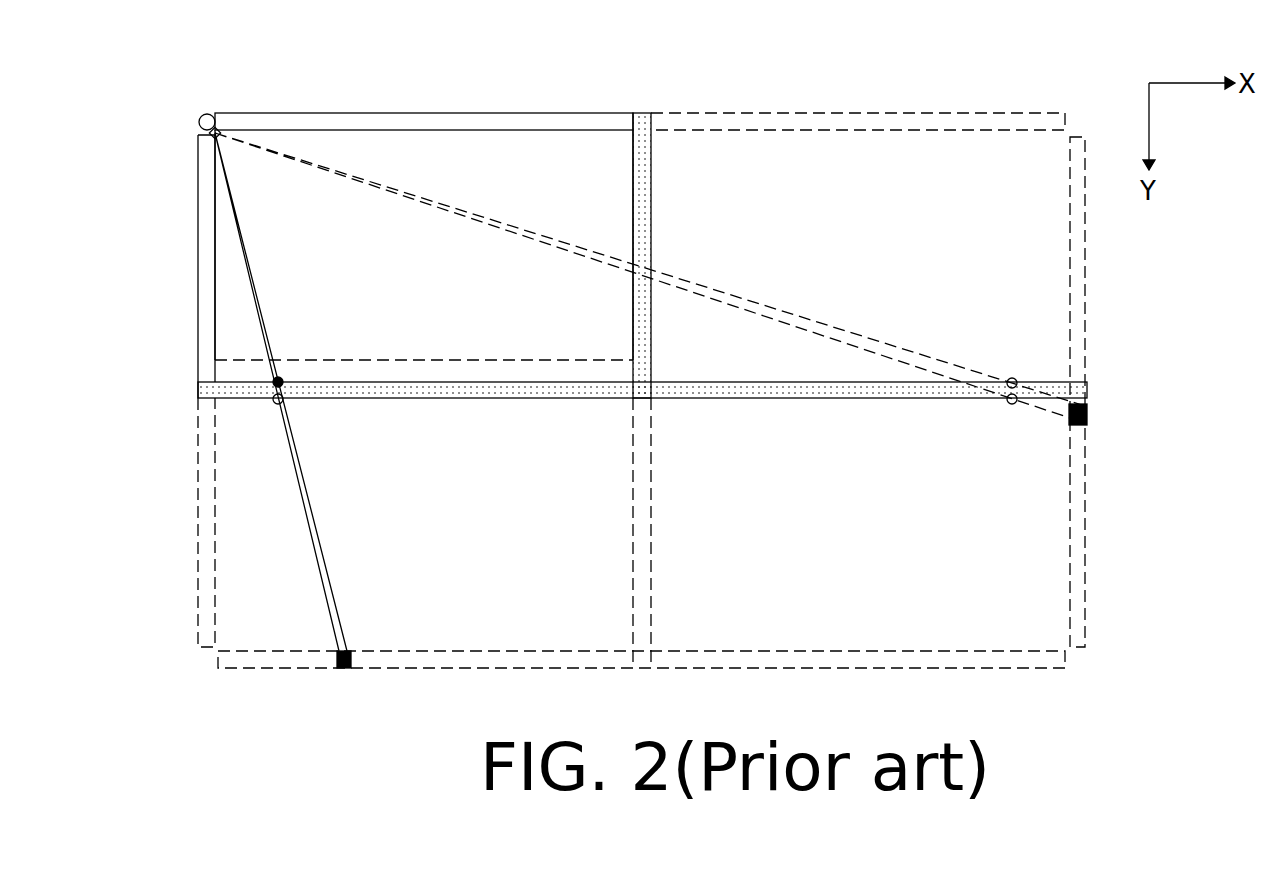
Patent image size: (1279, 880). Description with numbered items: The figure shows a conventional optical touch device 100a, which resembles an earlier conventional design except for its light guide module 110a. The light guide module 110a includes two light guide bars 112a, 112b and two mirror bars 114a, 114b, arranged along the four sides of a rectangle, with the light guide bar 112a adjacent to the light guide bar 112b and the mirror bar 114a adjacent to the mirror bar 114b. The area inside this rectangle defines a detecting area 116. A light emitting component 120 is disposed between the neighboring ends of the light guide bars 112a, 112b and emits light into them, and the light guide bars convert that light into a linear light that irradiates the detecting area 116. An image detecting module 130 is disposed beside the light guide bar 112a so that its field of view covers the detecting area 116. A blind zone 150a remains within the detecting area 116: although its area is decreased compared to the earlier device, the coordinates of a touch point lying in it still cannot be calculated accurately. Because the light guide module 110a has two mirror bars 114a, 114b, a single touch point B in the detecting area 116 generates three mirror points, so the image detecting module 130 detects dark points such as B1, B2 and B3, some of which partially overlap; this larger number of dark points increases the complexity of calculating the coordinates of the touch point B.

The conventional optical touch device 100a is at (1197, 677).
The light guide module 110a is at (600, 118).
The light guide bar 112a is at (200, 245).
The light guide bar 112b is at (500, 118).
The mirror bar 114a is at (200, 392).
The mirror bar 114b is at (652, 170).
The detecting area 116 is at (405, 160).
The light emitting component 120 is at (206, 112).
The image detecting module 130 is at (210, 132).
The blind zone 150a is at (212, 378).
The touch point B is at (283, 378).
The dark point B1 is at (274, 406).
The dark point B2 is at (1012, 377).
The dark point B3 is at (1012, 405).